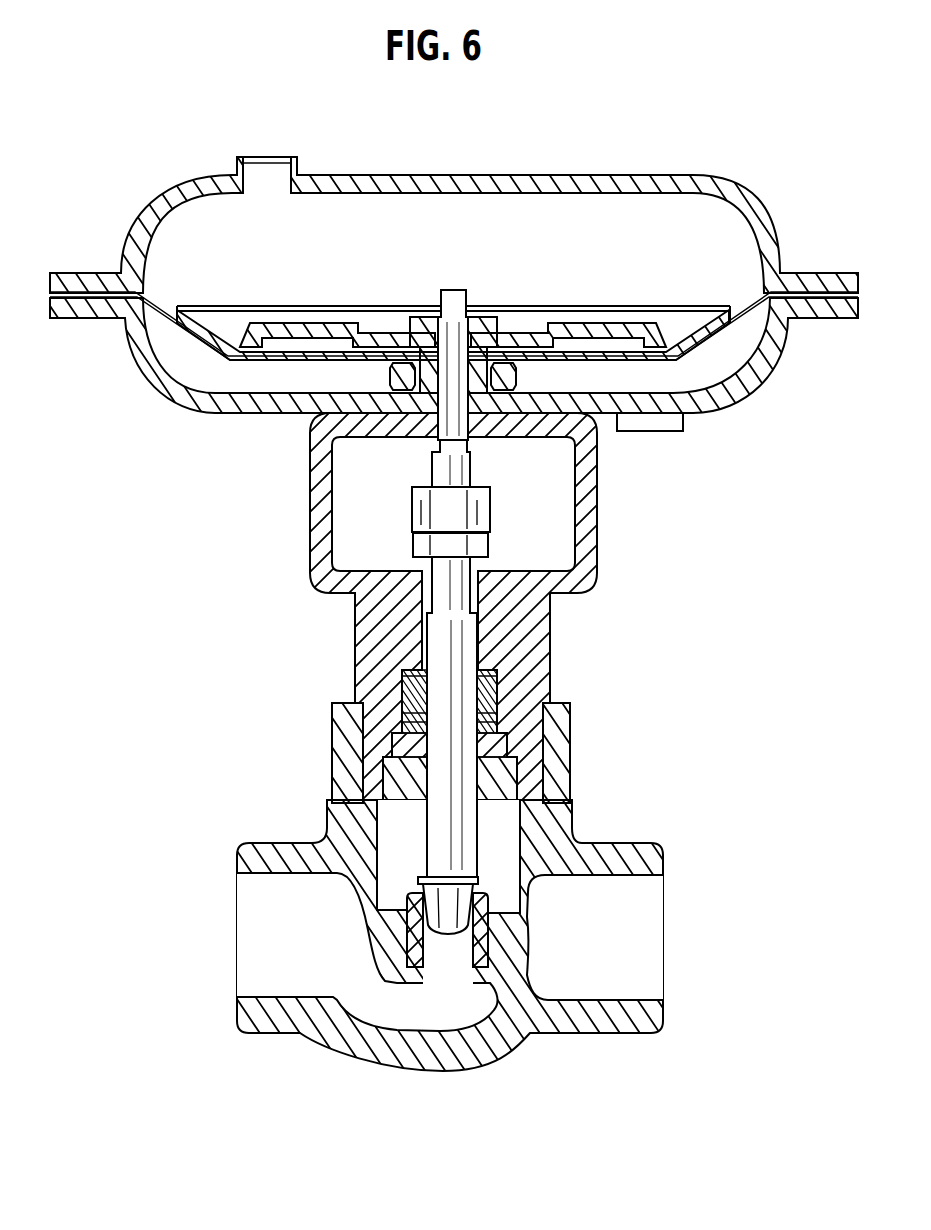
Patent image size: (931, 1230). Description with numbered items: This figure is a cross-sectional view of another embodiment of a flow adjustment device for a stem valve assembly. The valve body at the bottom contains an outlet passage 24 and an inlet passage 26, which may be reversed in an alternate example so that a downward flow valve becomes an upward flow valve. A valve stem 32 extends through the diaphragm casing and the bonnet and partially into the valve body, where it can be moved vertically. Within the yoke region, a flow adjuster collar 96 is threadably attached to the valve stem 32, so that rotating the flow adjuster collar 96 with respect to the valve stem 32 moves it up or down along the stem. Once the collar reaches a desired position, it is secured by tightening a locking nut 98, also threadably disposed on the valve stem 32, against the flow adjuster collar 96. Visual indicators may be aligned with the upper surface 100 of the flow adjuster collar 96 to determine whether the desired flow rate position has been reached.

The outlet passage 24 is at (262, 907).
The inlet passage 26 is at (636, 938).
The valve stem 32 is at (470, 467).
The flow adjuster collar 96 is at (483, 515).
The locking nut 98 is at (488, 545).
The upper surface 100 is at (430, 485).